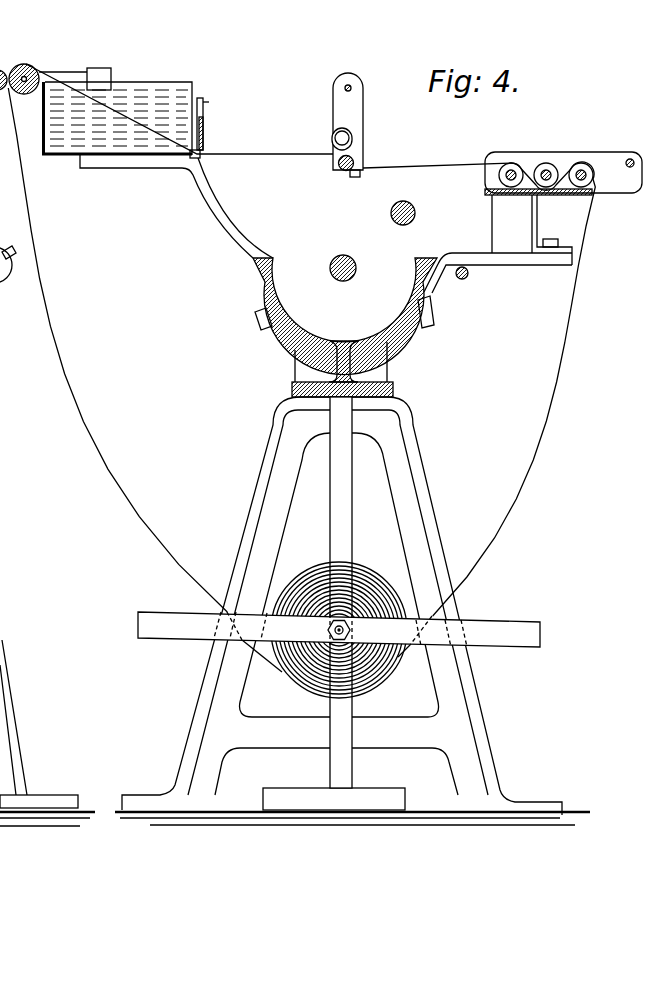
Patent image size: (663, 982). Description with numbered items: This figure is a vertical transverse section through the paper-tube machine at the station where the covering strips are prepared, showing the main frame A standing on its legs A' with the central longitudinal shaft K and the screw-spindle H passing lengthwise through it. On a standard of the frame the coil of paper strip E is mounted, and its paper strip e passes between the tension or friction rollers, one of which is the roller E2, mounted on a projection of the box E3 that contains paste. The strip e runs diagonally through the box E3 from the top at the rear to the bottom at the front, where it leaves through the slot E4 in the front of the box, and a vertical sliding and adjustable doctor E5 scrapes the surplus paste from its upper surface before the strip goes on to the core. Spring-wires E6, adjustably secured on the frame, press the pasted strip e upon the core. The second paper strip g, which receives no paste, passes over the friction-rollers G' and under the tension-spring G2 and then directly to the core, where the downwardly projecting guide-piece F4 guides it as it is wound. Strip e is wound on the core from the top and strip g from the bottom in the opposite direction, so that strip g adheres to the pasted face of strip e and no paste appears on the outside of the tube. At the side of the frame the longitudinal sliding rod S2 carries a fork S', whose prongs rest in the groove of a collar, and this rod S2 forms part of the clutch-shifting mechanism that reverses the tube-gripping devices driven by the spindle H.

The tension or friction roller E2 is at (20, 67).
The box E3 is at (115, 111).
The slot E4 is at (203, 153).
The doctor E5 is at (209, 114).
The spring-wires E6 is at (326, 144).
The guide-piece F4 is at (350, 125).
The paper strip e is at (170, 368).
The screw-spindle H is at (410, 208).
The central longitudinal shaft K is at (355, 268).
The frame A is at (326, 276).
The legs A' is at (342, 606).
The coil of paper strip E is at (339, 622).
The friction-rollers G' is at (563, 189).
The tension-spring G2 is at (583, 162).
The longitudinal sliding rod S2 is at (468, 277).
The fork S' is at (8, 250).
The paper strip g is at (479, 409).